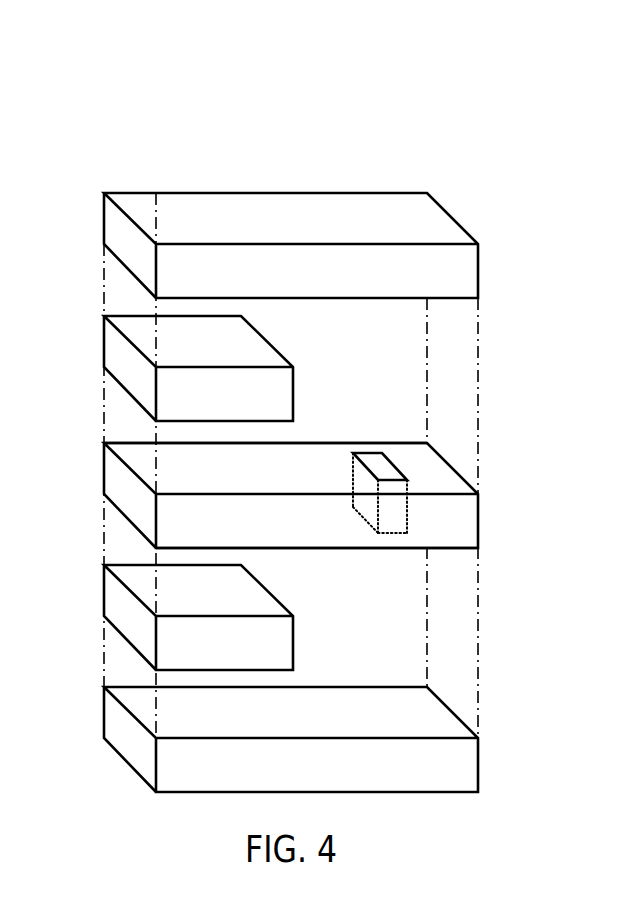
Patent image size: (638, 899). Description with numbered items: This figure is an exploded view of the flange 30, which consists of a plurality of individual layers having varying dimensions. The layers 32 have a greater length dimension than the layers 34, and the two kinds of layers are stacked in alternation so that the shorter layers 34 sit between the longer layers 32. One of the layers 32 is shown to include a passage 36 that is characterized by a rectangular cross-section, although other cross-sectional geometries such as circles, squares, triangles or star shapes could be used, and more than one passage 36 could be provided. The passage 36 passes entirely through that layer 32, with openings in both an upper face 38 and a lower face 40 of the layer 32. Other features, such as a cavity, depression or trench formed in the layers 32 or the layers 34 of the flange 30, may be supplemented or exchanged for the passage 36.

The flange 30 is at (219, 54).
The layers 32 is at (122, 234).
The layers 34 is at (122, 358).
The passage 36 is at (378, 467).
The upper face 38 is at (306, 434).
The lower face 40 is at (400, 557).